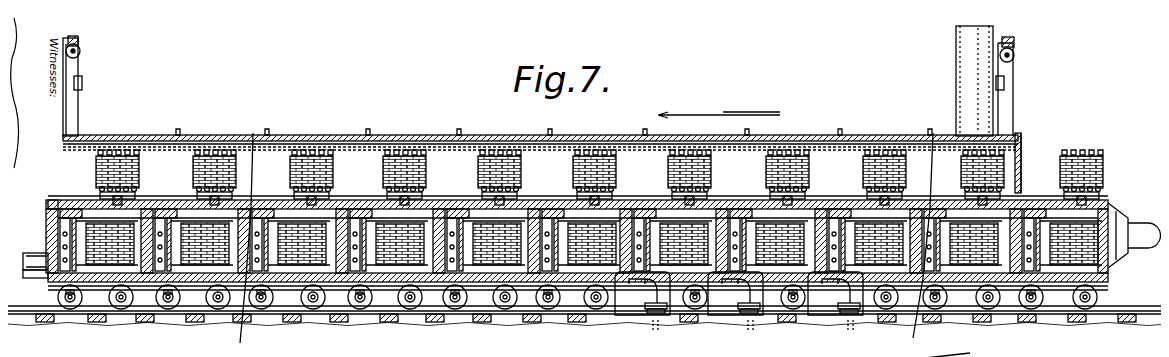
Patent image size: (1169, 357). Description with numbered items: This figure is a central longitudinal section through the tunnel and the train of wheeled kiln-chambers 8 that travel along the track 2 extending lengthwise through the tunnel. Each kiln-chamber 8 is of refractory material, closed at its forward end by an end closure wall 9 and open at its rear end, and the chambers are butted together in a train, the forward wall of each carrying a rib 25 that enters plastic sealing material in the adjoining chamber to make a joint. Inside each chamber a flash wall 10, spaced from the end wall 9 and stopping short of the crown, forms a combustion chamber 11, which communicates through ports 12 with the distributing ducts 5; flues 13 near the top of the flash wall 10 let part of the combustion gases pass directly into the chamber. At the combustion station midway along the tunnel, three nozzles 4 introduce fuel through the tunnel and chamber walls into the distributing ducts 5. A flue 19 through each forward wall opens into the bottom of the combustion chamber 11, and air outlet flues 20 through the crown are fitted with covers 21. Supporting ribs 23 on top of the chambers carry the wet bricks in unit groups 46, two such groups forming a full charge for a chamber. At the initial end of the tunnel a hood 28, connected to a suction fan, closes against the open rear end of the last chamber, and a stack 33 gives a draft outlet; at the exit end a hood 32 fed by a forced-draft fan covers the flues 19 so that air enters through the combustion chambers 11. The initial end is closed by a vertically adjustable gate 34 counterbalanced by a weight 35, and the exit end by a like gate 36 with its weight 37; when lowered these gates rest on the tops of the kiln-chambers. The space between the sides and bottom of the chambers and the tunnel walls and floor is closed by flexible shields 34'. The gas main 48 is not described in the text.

The track 2 is at (380, 306).
The nozzles 4 is at (739, 307).
The distributing ducts 5 is at (48, 280).
The kiln-chamber 8 is at (1055, 276).
The end closure wall 9 is at (40, 196).
The flash wall 10 is at (945, 274).
The combustion chamber 11 is at (52, 226).
The ports 12 is at (38, 243).
The flues 13 is at (50, 212).
The flue 19 is at (1000, 278).
The air outlet flues 20 is at (178, 190).
The covers 21 is at (855, 172).
The supporting ribs 23 is at (1106, 176).
The rib 25 is at (55, 172).
The hood 28 is at (1124, 226).
The hood 32 is at (40, 270).
The stack 33 is at (948, 94).
The gate 34 is at (1030, 163).
The flexible shields 34' is at (584, 319).
The weight 35 is at (1008, 82).
The gate 36 is at (55, 153).
The weight 37 is at (74, 77).
The unit groups 46 is at (870, 150).
The gas main 48 is at (883, 354).